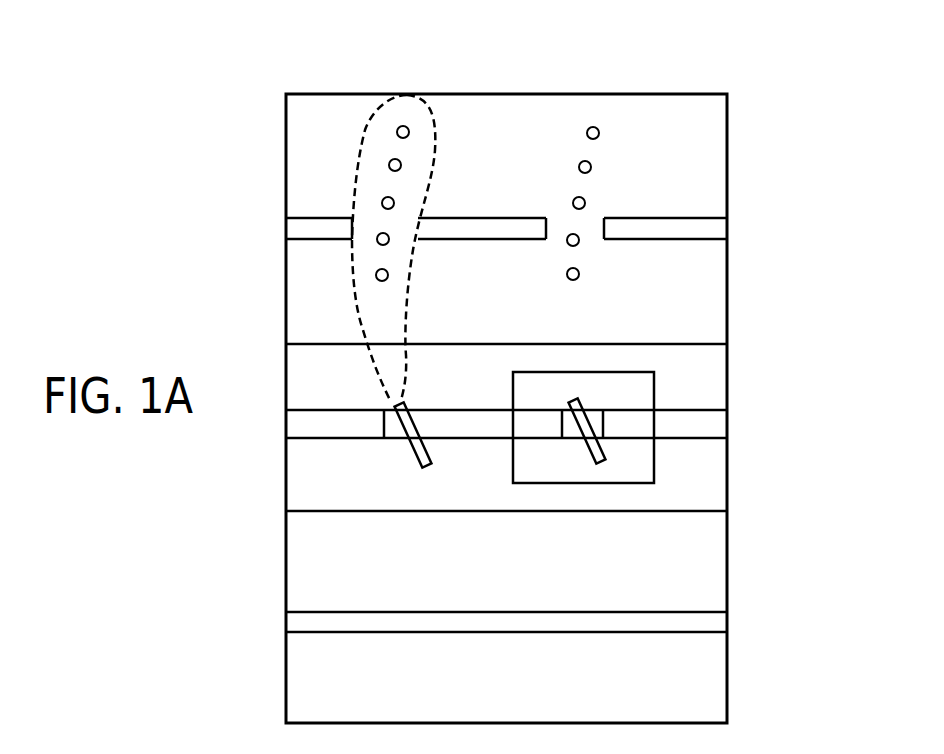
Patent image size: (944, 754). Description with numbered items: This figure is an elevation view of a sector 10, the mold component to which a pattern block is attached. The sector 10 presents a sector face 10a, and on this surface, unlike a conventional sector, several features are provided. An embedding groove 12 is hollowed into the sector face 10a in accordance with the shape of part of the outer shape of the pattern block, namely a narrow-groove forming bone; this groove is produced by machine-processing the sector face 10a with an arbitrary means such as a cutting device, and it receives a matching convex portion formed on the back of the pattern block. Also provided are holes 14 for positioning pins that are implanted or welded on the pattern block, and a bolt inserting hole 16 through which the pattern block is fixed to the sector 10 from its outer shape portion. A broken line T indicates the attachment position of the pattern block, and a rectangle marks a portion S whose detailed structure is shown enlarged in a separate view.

The sector 10 is at (685, 140).
The sector face 10a is at (677, 204).
The embedding groove 12 is at (415, 448).
The holes for positioning pins 14 is at (391, 162).
The bolt inserting hole 16 is at (382, 203).
The broken line indicating attachment position T is at (437, 125).
The portion surrounded by a rectangle S is at (623, 372).